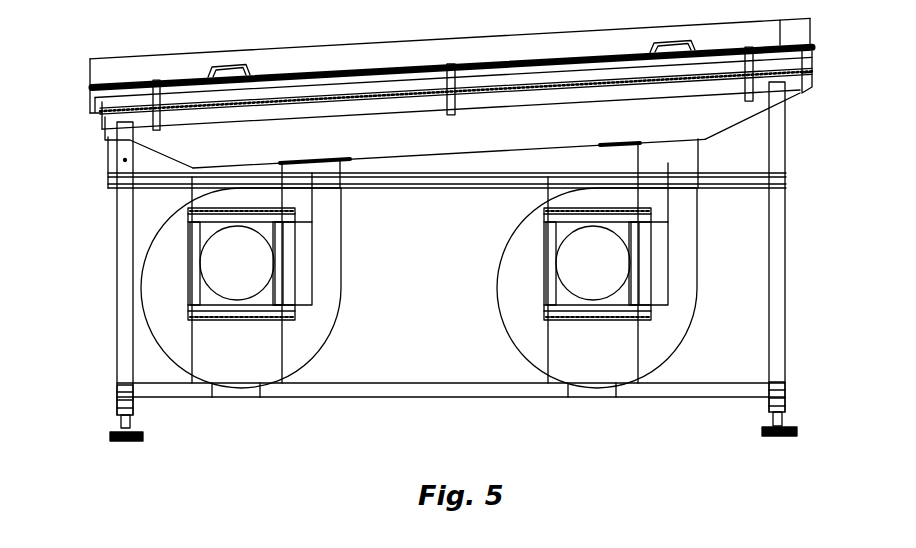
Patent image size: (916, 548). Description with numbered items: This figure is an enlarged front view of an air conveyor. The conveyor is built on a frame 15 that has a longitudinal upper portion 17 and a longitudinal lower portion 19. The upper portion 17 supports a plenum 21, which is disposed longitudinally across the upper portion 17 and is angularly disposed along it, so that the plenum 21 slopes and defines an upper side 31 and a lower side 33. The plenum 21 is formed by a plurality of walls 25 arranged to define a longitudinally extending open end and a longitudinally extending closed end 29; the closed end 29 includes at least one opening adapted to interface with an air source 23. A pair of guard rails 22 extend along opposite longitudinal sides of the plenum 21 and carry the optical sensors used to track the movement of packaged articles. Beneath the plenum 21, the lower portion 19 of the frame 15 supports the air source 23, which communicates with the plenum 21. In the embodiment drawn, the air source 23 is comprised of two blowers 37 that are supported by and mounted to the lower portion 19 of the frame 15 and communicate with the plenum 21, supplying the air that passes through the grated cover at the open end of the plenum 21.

The frame 15 is at (791, 213).
The upper portion 17 is at (787, 124).
The lower portion 19 is at (399, 399).
The plenum 21 is at (540, 137).
The guard rails 22 is at (805, 35).
The air source 23 is at (341, 270).
The walls 25 is at (443, 135).
The closed end 29 is at (401, 154).
The upper side 31 is at (813, 56).
The lower side 33 is at (100, 112).
The blowers 37 is at (335, 316).